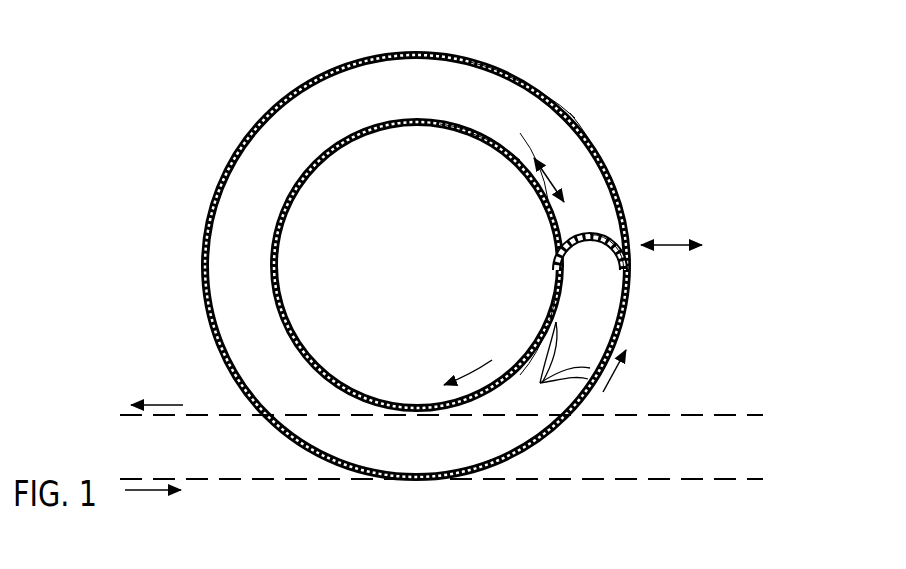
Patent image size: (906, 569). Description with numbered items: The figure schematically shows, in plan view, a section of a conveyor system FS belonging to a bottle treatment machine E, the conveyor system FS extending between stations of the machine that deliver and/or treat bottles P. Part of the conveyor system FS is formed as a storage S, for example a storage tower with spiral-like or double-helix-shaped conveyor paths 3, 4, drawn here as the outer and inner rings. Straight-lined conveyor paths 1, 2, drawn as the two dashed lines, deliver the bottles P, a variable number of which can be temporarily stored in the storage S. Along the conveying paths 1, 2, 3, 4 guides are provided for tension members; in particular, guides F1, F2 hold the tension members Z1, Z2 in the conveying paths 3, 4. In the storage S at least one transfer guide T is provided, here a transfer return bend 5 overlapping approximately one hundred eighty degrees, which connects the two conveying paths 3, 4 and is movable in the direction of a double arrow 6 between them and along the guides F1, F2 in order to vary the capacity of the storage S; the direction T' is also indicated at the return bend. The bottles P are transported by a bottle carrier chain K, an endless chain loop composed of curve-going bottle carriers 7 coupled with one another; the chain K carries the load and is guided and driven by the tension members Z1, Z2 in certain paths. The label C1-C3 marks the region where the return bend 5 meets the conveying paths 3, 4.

The straight-lined conveyor path 1 is at (682, 478).
The straight-lined conveyor path 2 is at (683, 414).
The spiral-like conveyor path 3 is at (607, 176).
The spiral-like conveyor path 4 is at (512, 165).
The transfer return bend 5 is at (597, 231).
The double arrow 6 is at (538, 192).
The bottle carrier 7 is at (553, 290).
The bottle carrier chain K is at (558, 279).
The bottle P is at (540, 340).
The storage S is at (594, 134).
The transfer guide T is at (577, 194).
The transverse transfer direction T' is at (671, 270).
The bottle treatment machine E is at (706, 199).
The conveyor system FS is at (698, 282).
The tension member Z1 is at (484, 135).
The tension member Z2 is at (512, 78).
The guide F1 is at (486, 152).
The guide F2 is at (543, 92).
The conveyor sections C1-C3 is at (542, 368).